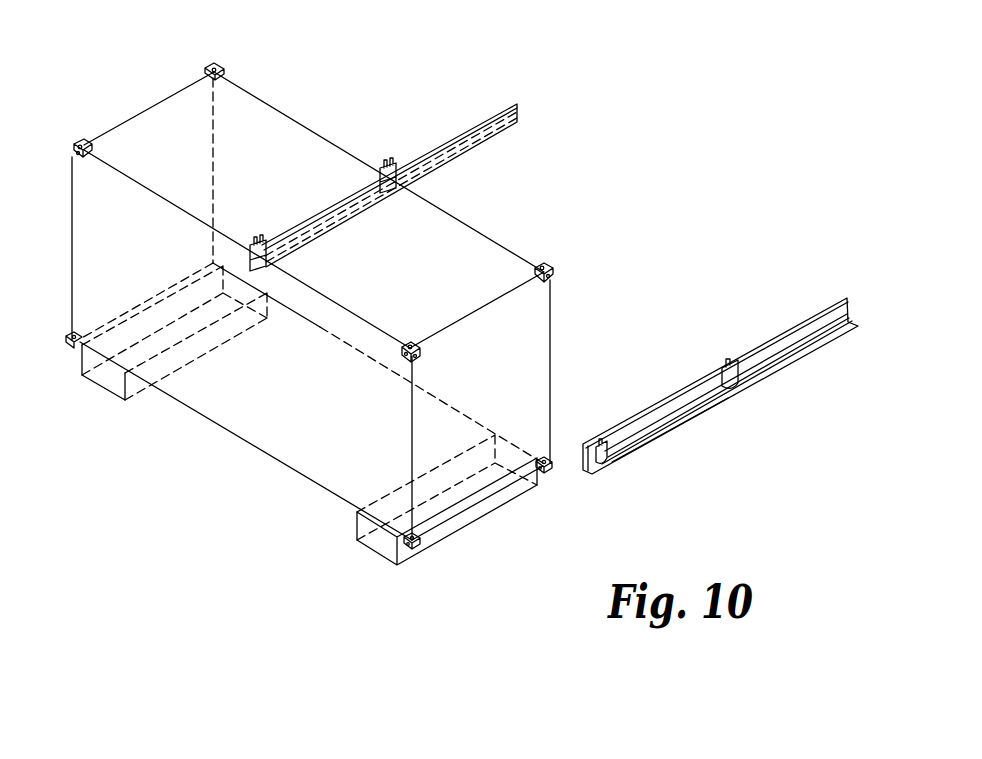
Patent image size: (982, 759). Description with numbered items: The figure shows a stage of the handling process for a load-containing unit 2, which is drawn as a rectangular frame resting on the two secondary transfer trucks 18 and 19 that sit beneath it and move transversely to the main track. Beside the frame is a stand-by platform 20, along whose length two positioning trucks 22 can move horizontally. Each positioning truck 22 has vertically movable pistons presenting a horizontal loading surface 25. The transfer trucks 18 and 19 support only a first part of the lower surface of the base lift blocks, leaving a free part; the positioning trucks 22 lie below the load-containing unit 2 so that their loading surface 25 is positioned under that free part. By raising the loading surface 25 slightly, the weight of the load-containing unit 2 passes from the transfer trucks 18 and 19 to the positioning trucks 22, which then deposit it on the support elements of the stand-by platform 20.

The load-containing unit 2 is at (284, 405).
The secondary transfer truck 18 is at (377, 548).
The secondary transfer truck 19 is at (103, 386).
The stand-by platform 20 is at (478, 138).
The positioning truck 22 is at (670, 413).
The loading surface 25 is at (388, 160).